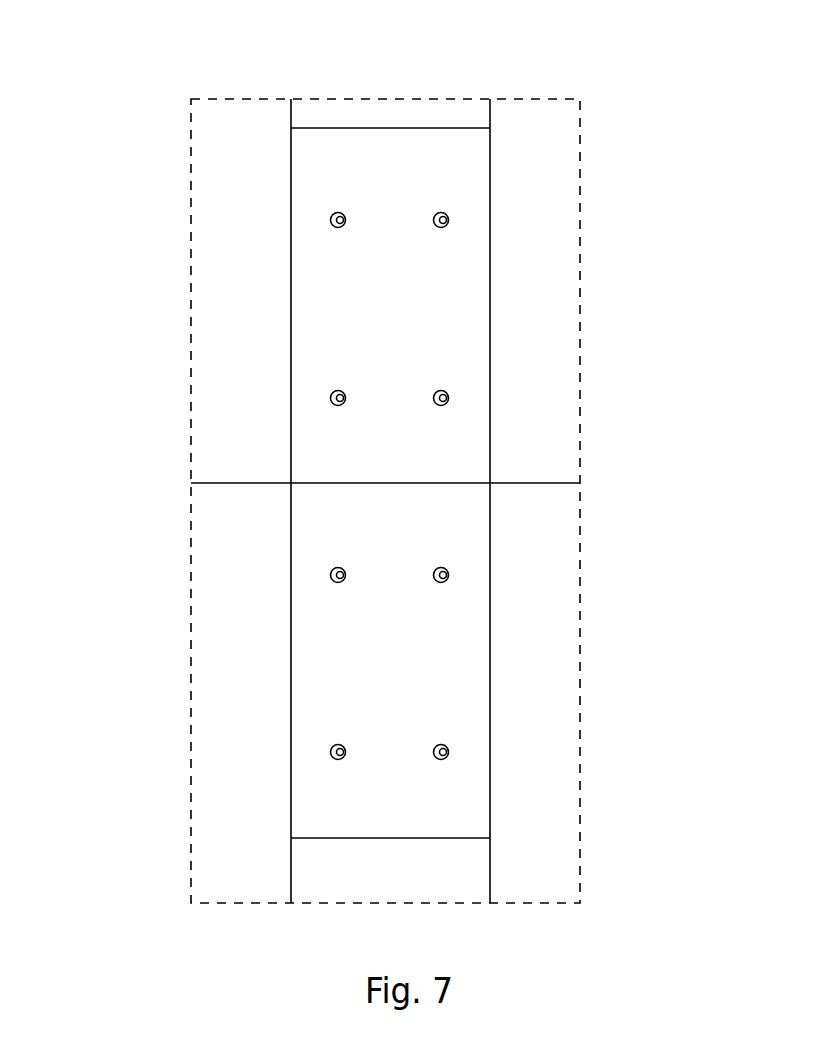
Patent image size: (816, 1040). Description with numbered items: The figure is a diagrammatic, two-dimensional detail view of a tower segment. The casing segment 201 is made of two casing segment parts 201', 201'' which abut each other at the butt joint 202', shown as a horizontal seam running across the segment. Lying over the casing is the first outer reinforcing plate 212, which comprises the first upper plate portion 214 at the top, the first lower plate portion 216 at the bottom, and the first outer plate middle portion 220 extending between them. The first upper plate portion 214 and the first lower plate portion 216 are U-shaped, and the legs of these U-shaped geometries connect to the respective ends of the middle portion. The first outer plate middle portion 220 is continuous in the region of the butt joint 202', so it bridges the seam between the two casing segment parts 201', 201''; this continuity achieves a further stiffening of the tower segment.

The casing segment 201 is at (303, 501).
The casing segment part 201' is at (166, 291).
The casing segment part 201'' is at (160, 693).
The butt joint 202' is at (478, 494).
The first outer reinforcing plate 212 is at (491, 217).
The first upper plate portion 214 is at (420, 114).
The first lower plate portion 216 is at (438, 872).
The first outer plate middle portion 220 is at (414, 305).